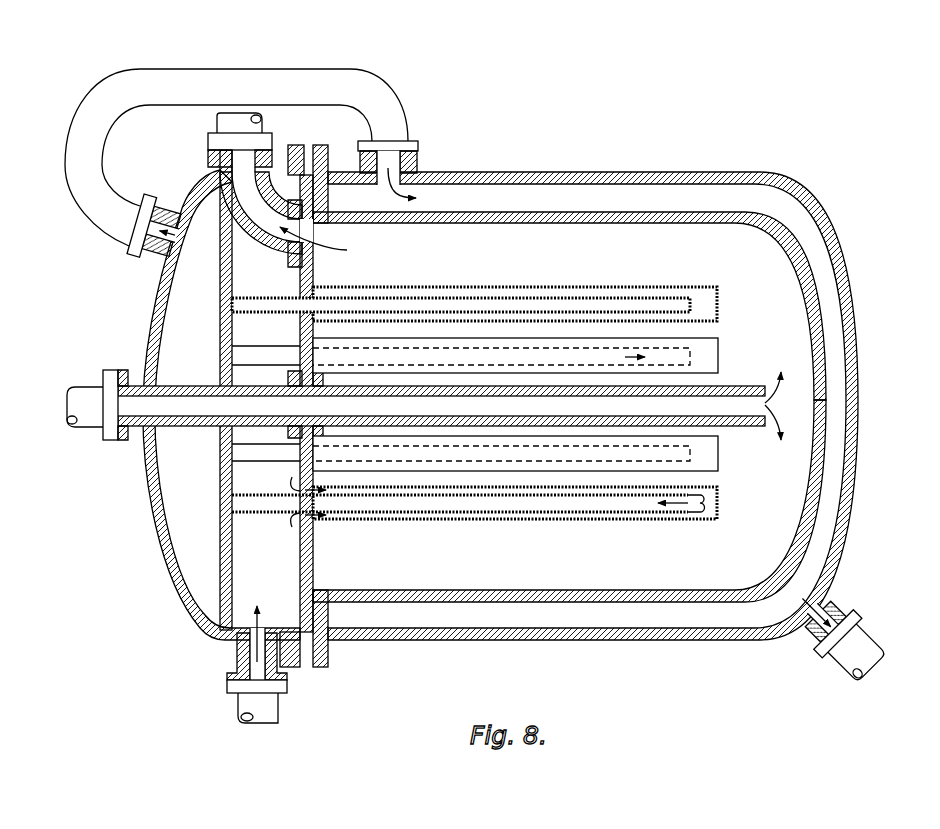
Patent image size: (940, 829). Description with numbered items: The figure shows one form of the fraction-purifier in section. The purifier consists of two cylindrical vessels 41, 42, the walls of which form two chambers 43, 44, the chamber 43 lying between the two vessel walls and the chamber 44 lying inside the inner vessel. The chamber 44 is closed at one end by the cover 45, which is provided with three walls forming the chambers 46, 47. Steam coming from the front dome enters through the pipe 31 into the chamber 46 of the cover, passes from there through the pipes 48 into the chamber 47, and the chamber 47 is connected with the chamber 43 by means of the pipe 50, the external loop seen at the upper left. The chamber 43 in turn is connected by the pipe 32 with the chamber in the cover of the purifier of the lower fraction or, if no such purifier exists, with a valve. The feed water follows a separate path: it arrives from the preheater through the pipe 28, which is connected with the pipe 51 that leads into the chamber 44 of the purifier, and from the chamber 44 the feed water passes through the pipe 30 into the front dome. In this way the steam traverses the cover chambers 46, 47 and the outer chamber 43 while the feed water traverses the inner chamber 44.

The pipe 28 is at (110, 423).
The pipe 30 is at (222, 138).
The pipe 31 is at (262, 708).
The pipe 32 is at (830, 647).
The cylindrical vessel 41 is at (457, 173).
The cylindrical vessel 42 is at (542, 217).
The chamber 43 is at (682, 202).
The chamber 44 is at (602, 573).
The cover 45 is at (300, 558).
The chamber 46 is at (248, 618).
The chamber 47 is at (180, 313).
The pipes 48 is at (718, 495).
The pipe 50 is at (258, 86).
The pipe 51 is at (735, 400).